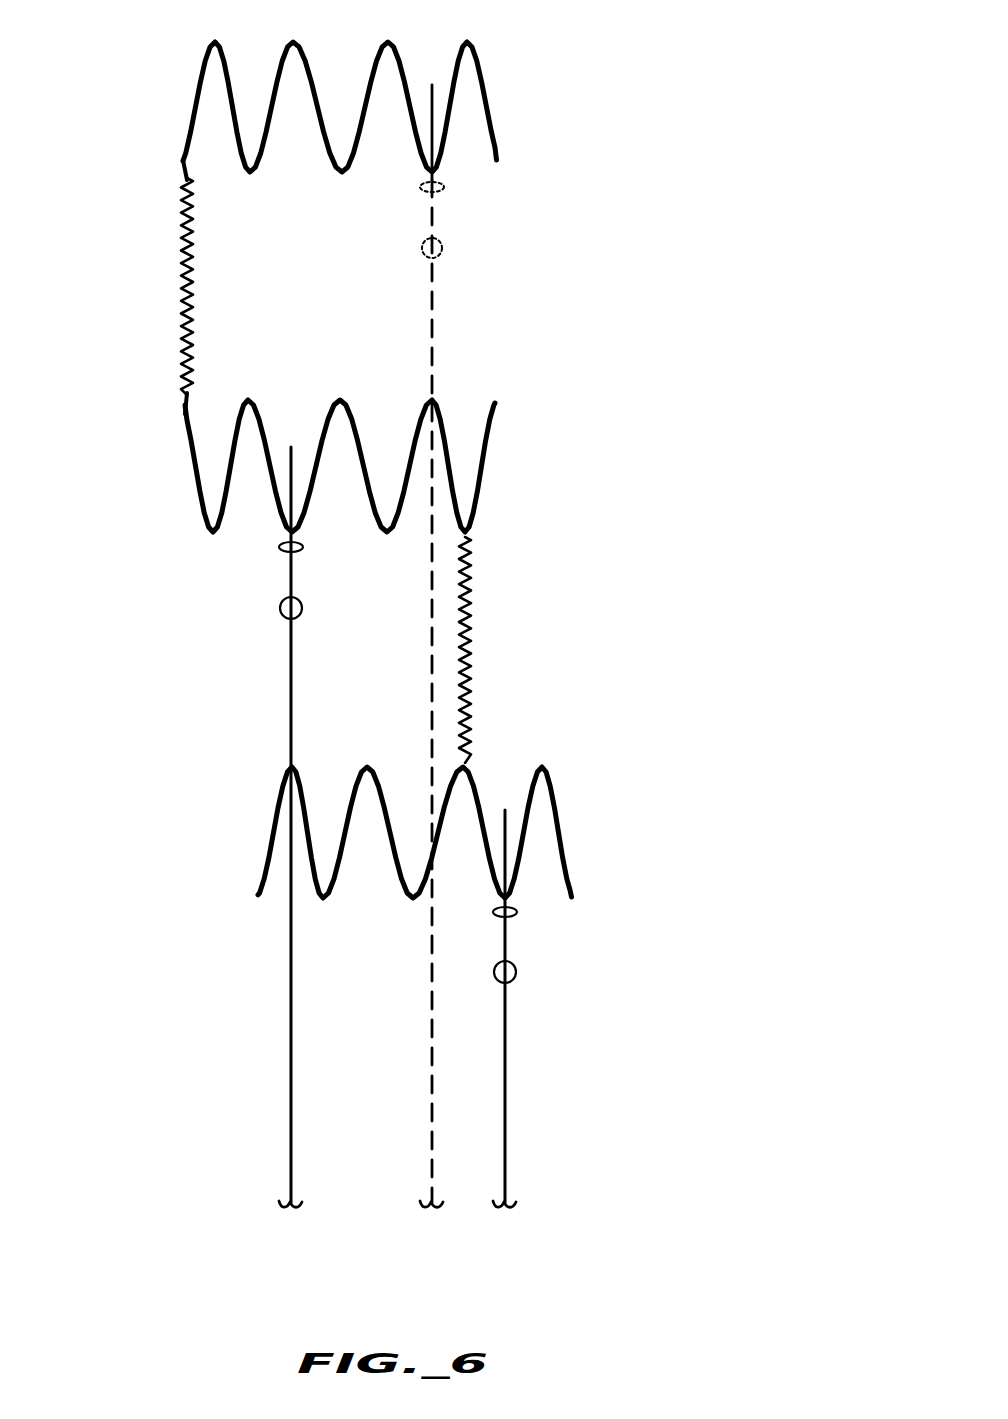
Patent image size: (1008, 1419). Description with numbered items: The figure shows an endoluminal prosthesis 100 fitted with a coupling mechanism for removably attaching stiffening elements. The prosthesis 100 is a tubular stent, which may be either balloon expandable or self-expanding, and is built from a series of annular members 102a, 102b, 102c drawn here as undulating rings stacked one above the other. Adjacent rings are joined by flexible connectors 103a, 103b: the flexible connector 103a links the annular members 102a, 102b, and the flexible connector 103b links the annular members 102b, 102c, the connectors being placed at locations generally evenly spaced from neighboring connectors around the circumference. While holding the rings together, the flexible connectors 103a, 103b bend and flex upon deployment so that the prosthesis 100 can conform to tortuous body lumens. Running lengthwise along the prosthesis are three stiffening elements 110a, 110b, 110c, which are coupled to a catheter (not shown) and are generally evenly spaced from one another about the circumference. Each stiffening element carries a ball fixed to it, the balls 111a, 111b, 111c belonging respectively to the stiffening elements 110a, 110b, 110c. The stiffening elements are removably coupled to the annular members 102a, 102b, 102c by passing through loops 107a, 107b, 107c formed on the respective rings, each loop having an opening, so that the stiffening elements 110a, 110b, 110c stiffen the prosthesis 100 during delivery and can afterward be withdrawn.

The endoluminal prosthesis 100 is at (758, 136).
The annular member 102a is at (483, 102).
The annular member 102b is at (487, 462).
The annular member 102c is at (560, 825).
The flexible connector 103a is at (180, 327).
The flexible connector 103b is at (467, 662).
The loop 107a is at (445, 186).
The loop 107b is at (285, 550).
The loop 107c is at (513, 913).
The stiffening element 110a is at (437, 312).
The stiffening element 110b is at (288, 693).
The stiffening element 110c is at (508, 1040).
The ball 111a is at (445, 250).
The ball 111b is at (280, 608).
The ball 111c is at (518, 972).